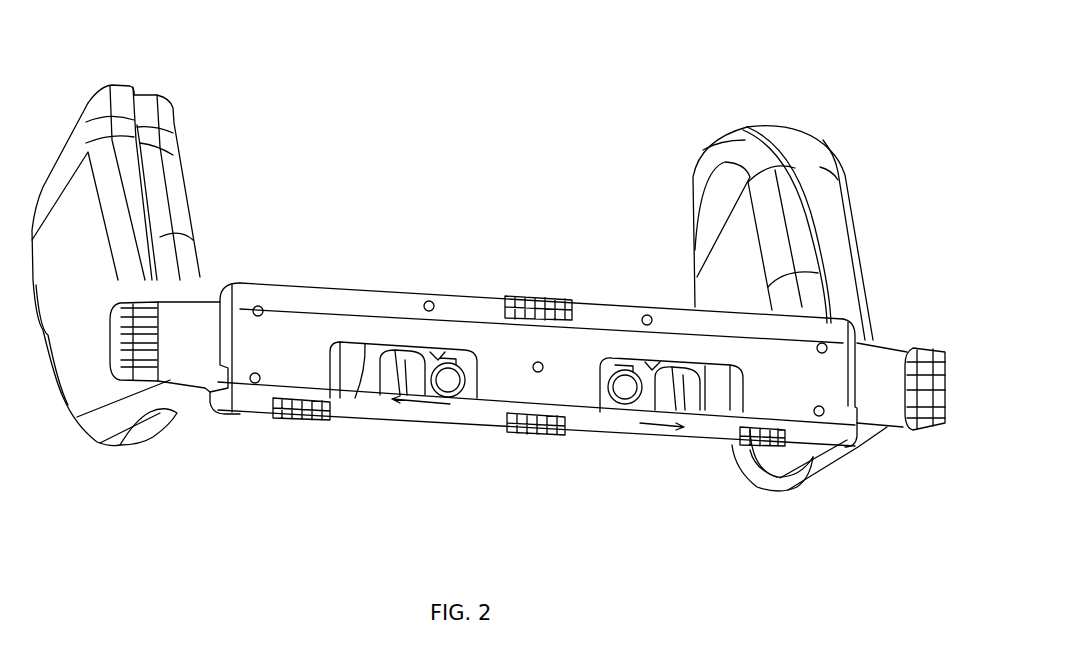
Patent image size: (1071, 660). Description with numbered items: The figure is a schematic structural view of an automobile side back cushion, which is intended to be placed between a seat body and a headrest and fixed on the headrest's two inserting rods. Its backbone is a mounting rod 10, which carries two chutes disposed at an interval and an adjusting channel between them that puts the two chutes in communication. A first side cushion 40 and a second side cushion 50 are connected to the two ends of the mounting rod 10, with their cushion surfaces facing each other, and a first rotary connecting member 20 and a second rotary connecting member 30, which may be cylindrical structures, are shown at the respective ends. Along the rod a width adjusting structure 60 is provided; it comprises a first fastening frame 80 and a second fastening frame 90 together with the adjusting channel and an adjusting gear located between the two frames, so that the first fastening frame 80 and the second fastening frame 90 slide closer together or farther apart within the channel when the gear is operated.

The mounting rod 10 is at (558, 383).
The first rotary connecting member 20 is at (170, 360).
The second rotary connecting member 30 is at (900, 397).
The first side cushion 40 is at (118, 132).
The second side cushion 50 is at (745, 128).
The width adjusting structure 60 is at (532, 265).
The first fastening frame 80 is at (443, 352).
The second fastening frame 90 is at (663, 378).